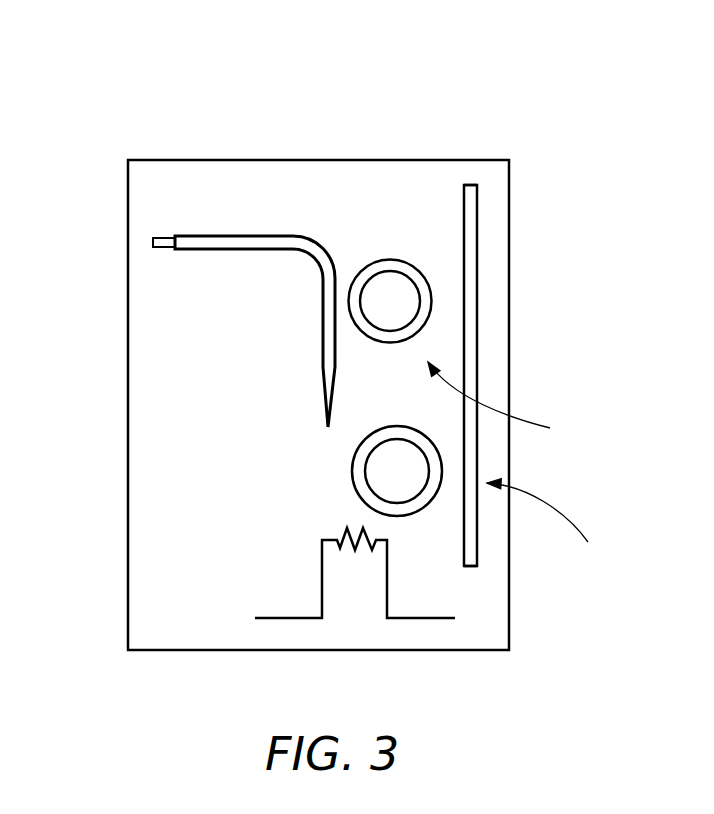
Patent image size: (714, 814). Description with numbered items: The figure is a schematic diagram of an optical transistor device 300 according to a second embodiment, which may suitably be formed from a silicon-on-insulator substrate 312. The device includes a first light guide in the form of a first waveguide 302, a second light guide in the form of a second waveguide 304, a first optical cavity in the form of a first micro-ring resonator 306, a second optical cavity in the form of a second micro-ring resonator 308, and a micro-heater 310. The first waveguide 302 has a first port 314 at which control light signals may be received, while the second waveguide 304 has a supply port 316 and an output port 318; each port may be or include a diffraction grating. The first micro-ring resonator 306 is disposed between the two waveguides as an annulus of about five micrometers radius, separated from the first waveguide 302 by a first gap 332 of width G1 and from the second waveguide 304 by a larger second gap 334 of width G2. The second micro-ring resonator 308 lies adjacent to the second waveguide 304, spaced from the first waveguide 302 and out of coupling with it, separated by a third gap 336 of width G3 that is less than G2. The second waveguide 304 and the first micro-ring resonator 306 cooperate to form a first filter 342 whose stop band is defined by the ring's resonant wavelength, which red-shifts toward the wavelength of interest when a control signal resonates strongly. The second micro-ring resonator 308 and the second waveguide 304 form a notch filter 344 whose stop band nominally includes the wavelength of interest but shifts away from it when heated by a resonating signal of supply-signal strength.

The optical transistor device 300 is at (460, 97).
The first waveguide 302 is at (265, 236).
The second waveguide 304 is at (478, 345).
The first micro-ring resonator 306 is at (387, 259).
The second micro-ring resonator 308 is at (352, 458).
The micro-heater 310 is at (347, 528).
The silicon-on-insulator substrate 312 is at (128, 620).
The first port 314 is at (153, 243).
The supply port 316 is at (478, 187).
The output port 318 is at (473, 565).
The first gap 332 is at (342, 298).
The second gap 334 is at (446, 293).
The third gap 336 is at (453, 472).
The first filter 342 is at (512, 402).
The notch filter 344 is at (562, 527).